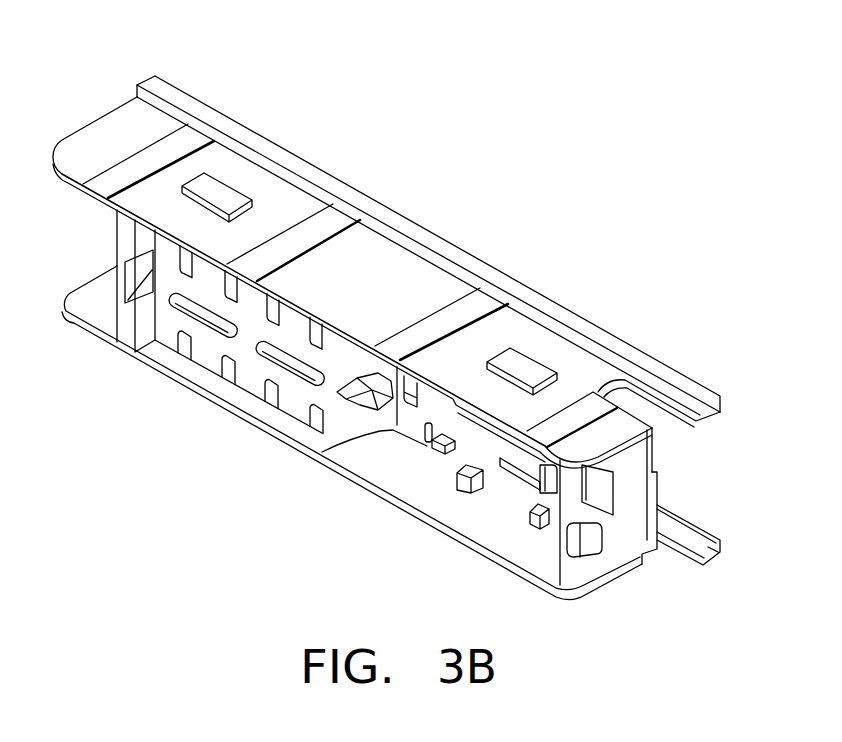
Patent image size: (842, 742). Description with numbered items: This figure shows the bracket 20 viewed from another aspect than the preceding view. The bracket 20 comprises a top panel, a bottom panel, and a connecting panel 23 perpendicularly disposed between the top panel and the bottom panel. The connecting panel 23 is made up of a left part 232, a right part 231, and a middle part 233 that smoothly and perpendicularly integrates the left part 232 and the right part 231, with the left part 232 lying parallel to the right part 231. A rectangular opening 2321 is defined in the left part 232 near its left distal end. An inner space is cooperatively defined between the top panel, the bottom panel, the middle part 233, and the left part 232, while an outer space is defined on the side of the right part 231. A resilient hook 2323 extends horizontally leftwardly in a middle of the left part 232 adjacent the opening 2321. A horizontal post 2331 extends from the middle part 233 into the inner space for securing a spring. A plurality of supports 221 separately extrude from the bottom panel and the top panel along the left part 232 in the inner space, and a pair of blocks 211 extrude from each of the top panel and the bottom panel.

The bracket 20 is at (422, 368).
The blocks 211 is at (213, 190).
The connecting panel 23 is at (260, 375).
The right part 231 is at (187, 323).
The left part 232 is at (492, 450).
The rectangular opening 2321 is at (600, 490).
The resilient hook 2323 is at (550, 488).
The middle part 233 is at (363, 422).
The horizontal post 2331 is at (362, 395).
The supports 221 is at (583, 543).